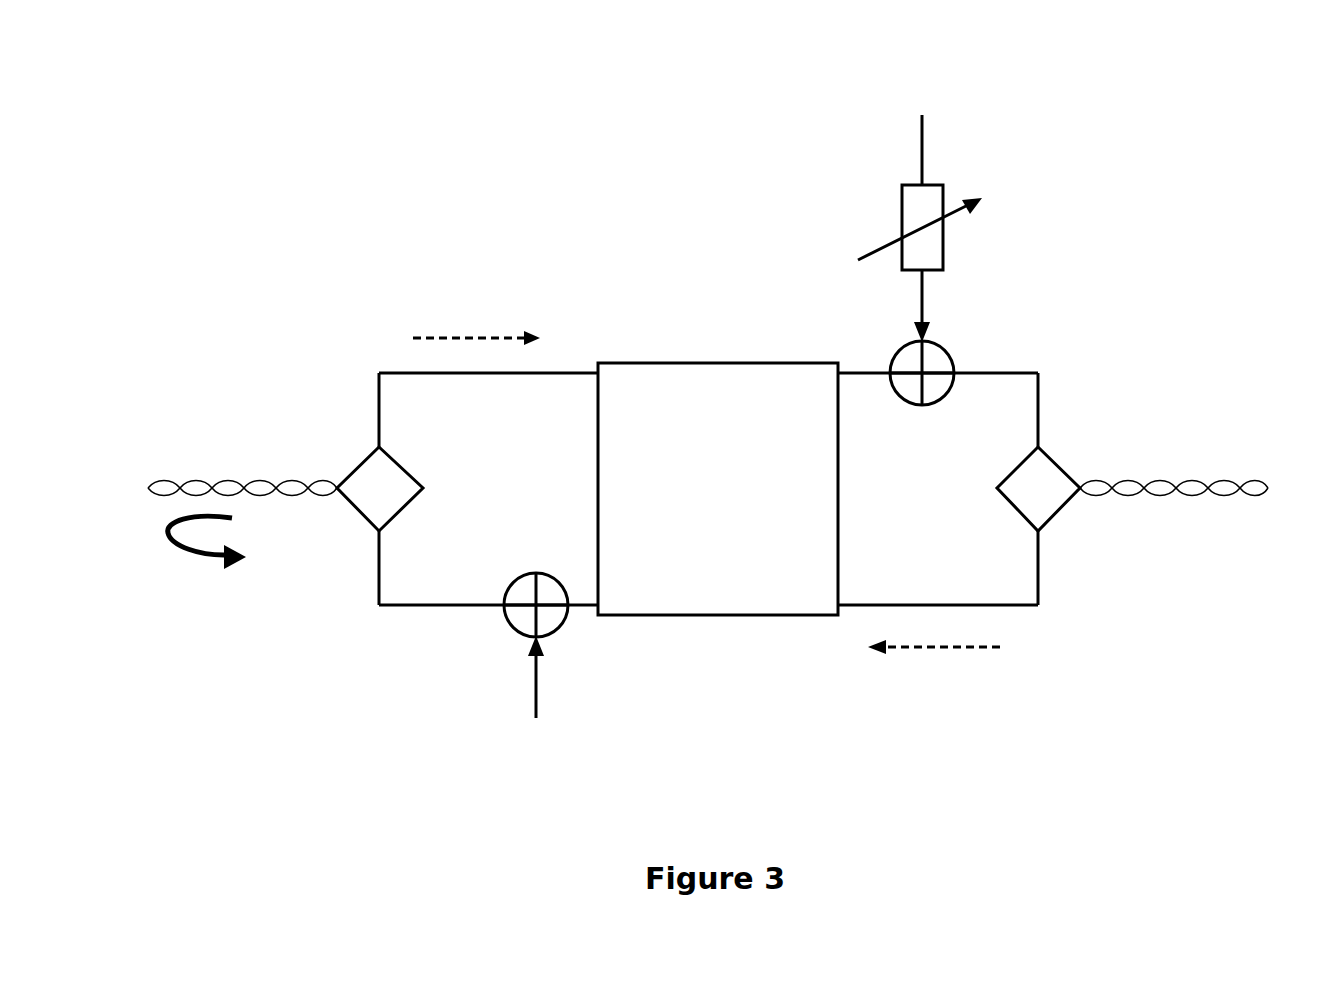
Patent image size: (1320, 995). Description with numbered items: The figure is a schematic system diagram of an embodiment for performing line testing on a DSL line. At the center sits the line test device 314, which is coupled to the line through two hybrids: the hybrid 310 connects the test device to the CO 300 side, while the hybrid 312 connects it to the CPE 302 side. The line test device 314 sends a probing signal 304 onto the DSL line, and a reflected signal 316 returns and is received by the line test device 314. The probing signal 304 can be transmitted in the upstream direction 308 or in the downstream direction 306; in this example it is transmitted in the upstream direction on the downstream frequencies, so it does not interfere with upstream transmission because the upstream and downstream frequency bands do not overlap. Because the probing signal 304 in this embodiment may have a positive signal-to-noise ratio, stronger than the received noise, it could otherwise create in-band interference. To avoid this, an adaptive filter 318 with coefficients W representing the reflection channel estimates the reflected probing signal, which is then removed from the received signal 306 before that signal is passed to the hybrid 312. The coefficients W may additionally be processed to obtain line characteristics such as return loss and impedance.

The CO 300 is at (242, 426).
The CPE 302 is at (1181, 426).
The probing signal 304 is at (536, 712).
The downstream direction 306 is at (472, 287).
The upstream direction 308 is at (934, 708).
The hybrid 310 is at (421, 489).
The hybrid 312 is at (991, 489).
The line test device 314 is at (718, 489).
The reflected signal 316 is at (207, 571).
The adaptive filter 318 is at (937, 206).